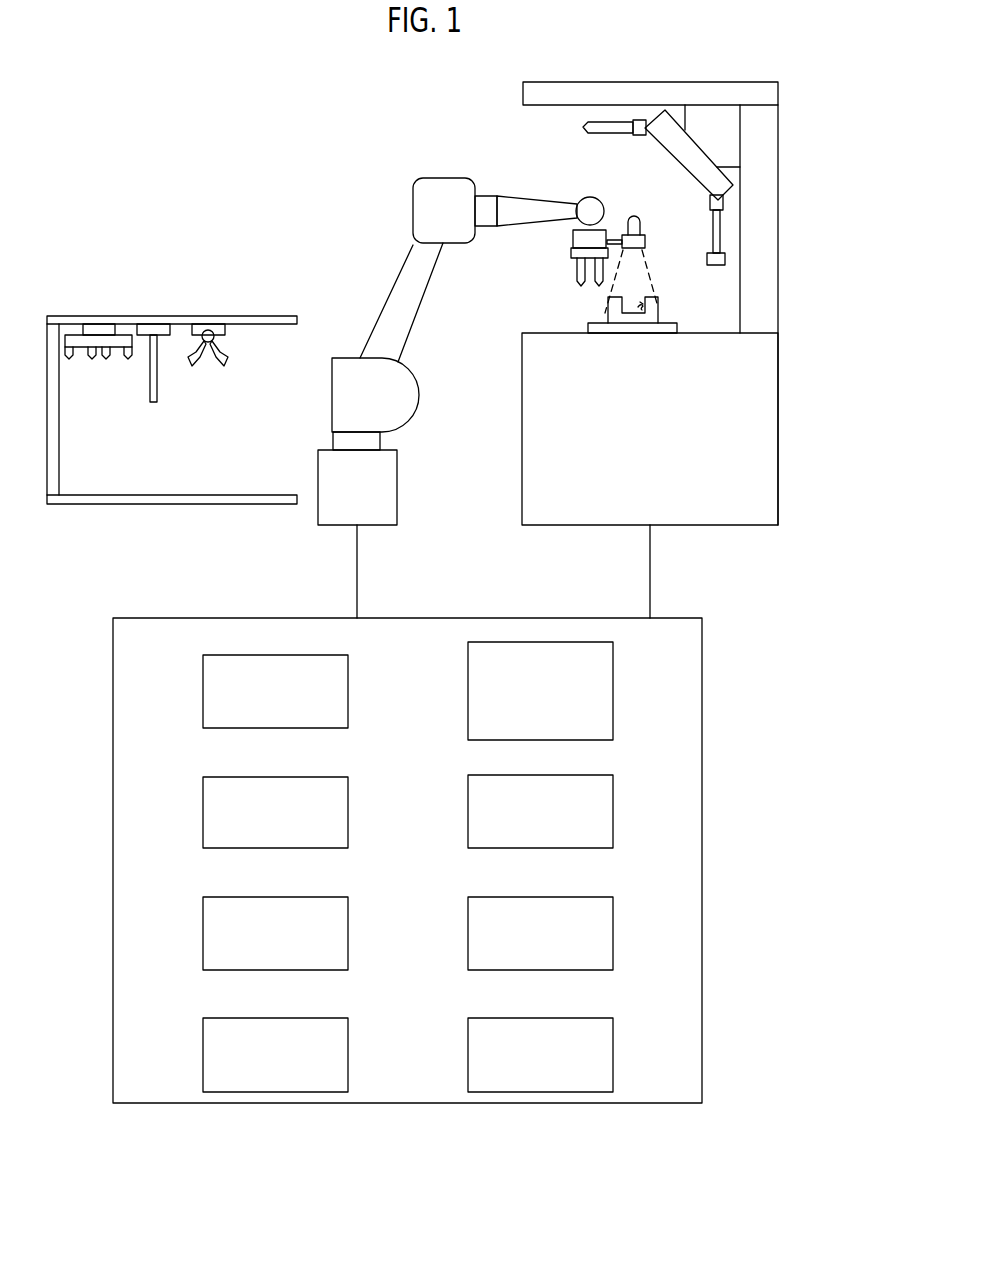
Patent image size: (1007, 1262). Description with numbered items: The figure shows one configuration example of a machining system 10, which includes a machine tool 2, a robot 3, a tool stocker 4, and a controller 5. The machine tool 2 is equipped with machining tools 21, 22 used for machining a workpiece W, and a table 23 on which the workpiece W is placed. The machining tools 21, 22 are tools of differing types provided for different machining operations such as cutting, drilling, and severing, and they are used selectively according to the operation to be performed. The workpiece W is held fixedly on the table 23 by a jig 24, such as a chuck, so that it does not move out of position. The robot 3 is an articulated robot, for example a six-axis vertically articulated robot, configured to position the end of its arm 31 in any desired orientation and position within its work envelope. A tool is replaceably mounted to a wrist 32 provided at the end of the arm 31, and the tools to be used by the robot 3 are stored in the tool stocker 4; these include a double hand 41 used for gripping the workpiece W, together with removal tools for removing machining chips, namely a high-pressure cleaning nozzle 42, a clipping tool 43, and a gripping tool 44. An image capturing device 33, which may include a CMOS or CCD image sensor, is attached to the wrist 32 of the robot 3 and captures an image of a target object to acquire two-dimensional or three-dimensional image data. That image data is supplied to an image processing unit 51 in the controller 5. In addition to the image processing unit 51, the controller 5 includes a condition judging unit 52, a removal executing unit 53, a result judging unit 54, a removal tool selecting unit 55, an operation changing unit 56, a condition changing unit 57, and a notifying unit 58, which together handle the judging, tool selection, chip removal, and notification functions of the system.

The machining system 10 is at (108, 134).
The machine tool 2 is at (618, 81).
The machining tool 21 is at (603, 133).
The machining tool 22 is at (725, 258).
The table 23 is at (538, 333).
The jig 24 is at (662, 335).
The workpiece W is at (662, 311).
The robot 3 is at (355, 256).
The arm 31 is at (527, 197).
The wrist 32 is at (572, 238).
The image capturing device 33 is at (645, 240).
The gripping tool 44 is at (576, 277).
The tool stocker 4 is at (93, 317).
The double hand 41 is at (108, 358).
The high-pressure cleaning nozzle 42 is at (158, 385).
The clipping tool 43 is at (223, 363).
The controller 5 is at (144, 618).
The image processing unit 51 is at (348, 677).
The condition judging unit 52 is at (348, 798).
The removal executing unit 53 is at (348, 920).
The result judging unit 54 is at (348, 1037).
The removal tool selecting unit 55 is at (613, 672).
The operation changing unit 56 is at (613, 795).
The condition changing unit 57 is at (613, 920).
The notifying unit 58 is at (613, 1042).